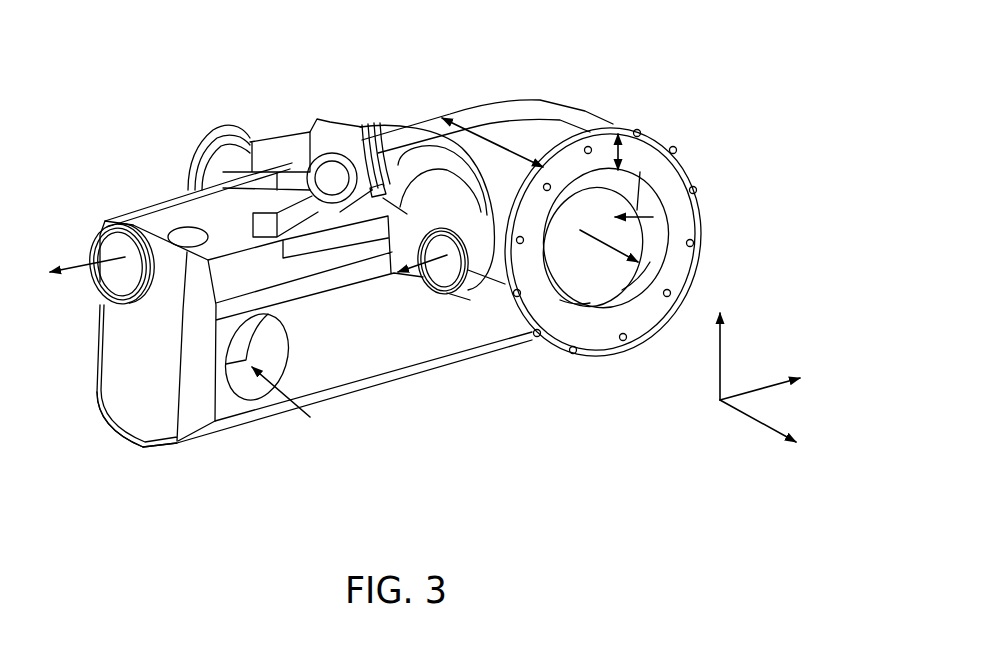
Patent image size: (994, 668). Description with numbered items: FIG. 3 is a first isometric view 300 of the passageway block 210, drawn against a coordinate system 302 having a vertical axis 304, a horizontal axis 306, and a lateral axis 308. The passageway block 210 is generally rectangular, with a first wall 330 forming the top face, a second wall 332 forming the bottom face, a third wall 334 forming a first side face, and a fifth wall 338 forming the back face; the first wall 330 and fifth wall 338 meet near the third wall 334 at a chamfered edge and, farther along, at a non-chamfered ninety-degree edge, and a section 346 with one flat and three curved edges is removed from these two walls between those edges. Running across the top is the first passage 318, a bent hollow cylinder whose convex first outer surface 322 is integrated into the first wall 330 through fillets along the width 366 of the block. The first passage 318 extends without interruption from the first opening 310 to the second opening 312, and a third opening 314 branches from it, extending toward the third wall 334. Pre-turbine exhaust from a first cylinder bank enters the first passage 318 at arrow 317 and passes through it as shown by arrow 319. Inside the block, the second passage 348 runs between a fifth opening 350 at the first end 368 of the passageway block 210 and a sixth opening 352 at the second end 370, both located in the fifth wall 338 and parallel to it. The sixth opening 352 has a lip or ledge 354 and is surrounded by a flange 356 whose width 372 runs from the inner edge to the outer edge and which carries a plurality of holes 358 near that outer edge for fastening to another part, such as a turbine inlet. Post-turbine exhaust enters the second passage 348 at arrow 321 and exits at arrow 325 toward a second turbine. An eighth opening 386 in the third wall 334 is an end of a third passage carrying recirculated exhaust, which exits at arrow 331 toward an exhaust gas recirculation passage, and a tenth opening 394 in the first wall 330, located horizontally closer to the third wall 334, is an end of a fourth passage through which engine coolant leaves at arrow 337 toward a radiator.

The first isometric view 300 is at (679, 40).
The passageway block 210 is at (777, 169).
The first opening 310 is at (218, 120).
The second opening 312 is at (452, 327).
The third opening 314 is at (356, 150).
The arrow 317 is at (188, 143).
The first passage 318 is at (438, 288).
The arrow 319 is at (417, 267).
The arrow 321 is at (263, 413).
The first outer surface 322 is at (297, 152).
The arrow 325 is at (660, 245).
The first wall 330 is at (548, 130).
The arrow 331 is at (82, 262).
The second wall 332 is at (300, 420).
The third wall 334 is at (100, 395).
The arrow 337 is at (189, 240).
The fifth wall 338 is at (450, 335).
The section 346 is at (332, 254).
The second passage 348 is at (653, 217).
The fifth opening 350 is at (237, 383).
The sixth opening 352 is at (588, 303).
The lip or ledge 354 is at (622, 290).
The flange 356 is at (658, 142).
The holes 358 is at (696, 245).
The width 366 is at (488, 138).
The first end 368 is at (152, 469).
The second end 370 is at (660, 390).
The width of the flange 372 is at (627, 143).
The eighth opening 386 is at (117, 272).
The tenth opening 394 is at (165, 210).
The coordinate system 302 is at (729, 425).
The vertical axis 304 is at (723, 343).
The horizontal axis 306 is at (765, 380).
The lateral axis 308 is at (778, 424).